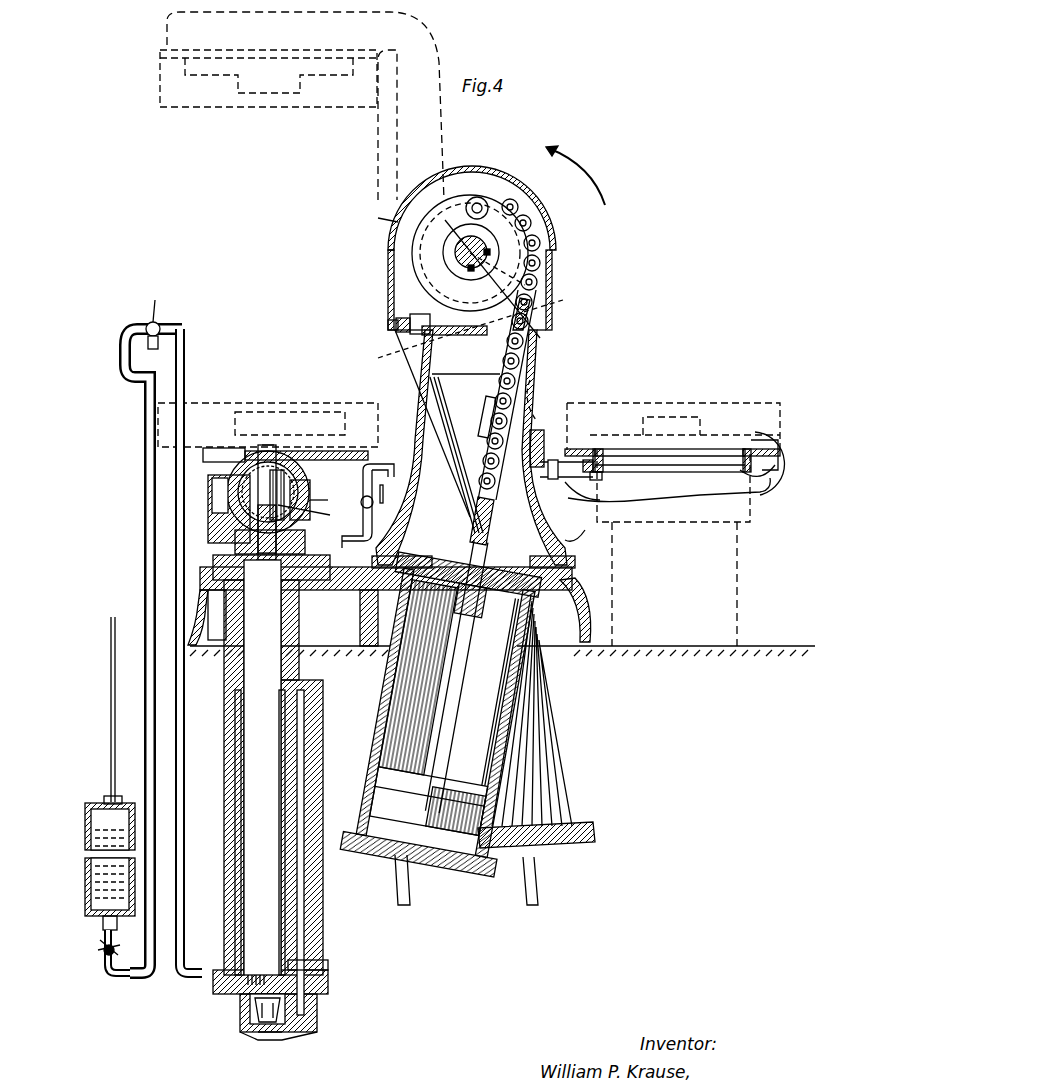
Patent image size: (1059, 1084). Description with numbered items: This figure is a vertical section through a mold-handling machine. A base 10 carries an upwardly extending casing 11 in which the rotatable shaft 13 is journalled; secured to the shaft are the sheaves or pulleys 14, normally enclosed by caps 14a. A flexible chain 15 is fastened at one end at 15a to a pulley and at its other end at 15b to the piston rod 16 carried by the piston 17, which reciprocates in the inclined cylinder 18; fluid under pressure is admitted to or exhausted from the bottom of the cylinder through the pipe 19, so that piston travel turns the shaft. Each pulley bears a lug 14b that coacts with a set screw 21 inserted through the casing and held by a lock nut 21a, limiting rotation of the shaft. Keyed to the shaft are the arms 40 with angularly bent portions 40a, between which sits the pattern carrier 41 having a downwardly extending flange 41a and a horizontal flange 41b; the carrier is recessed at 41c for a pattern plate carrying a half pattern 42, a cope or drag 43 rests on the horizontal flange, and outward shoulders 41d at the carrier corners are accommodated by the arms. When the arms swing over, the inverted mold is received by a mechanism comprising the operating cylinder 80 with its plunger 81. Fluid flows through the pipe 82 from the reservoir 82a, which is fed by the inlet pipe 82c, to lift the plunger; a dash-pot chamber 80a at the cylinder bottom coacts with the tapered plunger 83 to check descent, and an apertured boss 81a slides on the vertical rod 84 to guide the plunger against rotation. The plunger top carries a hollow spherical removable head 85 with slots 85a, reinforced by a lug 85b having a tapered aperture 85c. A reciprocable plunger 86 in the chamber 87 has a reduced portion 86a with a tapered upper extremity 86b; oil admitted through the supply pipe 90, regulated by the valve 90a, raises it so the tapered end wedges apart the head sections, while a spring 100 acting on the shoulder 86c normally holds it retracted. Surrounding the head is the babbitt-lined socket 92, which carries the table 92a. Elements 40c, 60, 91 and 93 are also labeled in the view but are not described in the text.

The base 10 is at (203, 648).
The casing 11 is at (535, 378).
The rotatable shaft 13 is at (458, 245).
The sheaves or pulleys 14 is at (506, 228).
The caps 14a is at (400, 225).
The lug 14b is at (454, 332).
The flexible chain 15 is at (532, 290).
The chain attachment to pulley 15a is at (480, 198).
The chain attachment to piston rod 15b is at (552, 540).
The piston rod 16 is at (460, 612).
The piston 17 is at (439, 700).
The cylinder 18 is at (500, 745).
The pipe 19 is at (408, 890).
The set screw 21 is at (390, 325).
The lock nut 21a is at (405, 318).
The arms 40 is at (546, 306).
The angularly bent portions 40a is at (167, 32).
The arm bracket 40c is at (565, 447).
The pattern carrier 41 is at (740, 470).
The downwardly extending flange 41a is at (635, 482).
The horizontal flange 41b is at (775, 454).
The recess 41c is at (765, 440).
The shoulders 41d is at (762, 470).
The half pattern 42 is at (268, 95).
The cope or drag 43 is at (198, 112).
The table 60 is at (737, 598).
The operating cylinder 80 is at (228, 790).
The dash-pot chamber 80a is at (272, 1030).
The plunger 81 is at (240, 752).
The apertured boss 81a is at (310, 972).
The fluid inlet and outlet pipe 82 is at (156, 946).
The fluid reservoir 82a is at (126, 975).
The inlet pipe 82c is at (113, 615).
The tapered plunger 83 is at (258, 1032).
The vertically extending rod 84 is at (303, 898).
The removable head 85 is at (212, 535).
The slots 85a is at (232, 492).
The lug 85b is at (240, 482).
The tapered aperture 85c is at (300, 452).
The reciprocable plunger 86 is at (290, 540).
The reduced portion 86a is at (305, 488).
The tapered upper extremity 86b is at (262, 472).
The shoulder 86c is at (214, 500).
The chamber 87 is at (261, 775).
The supply pipe 90 is at (372, 525).
The valve 90a is at (389, 493).
The pipe outlet 91 is at (392, 463).
The socket 92 is at (300, 478).
The table 92a is at (358, 450).
The collar 93 is at (333, 497).
The spring 100 is at (321, 510).